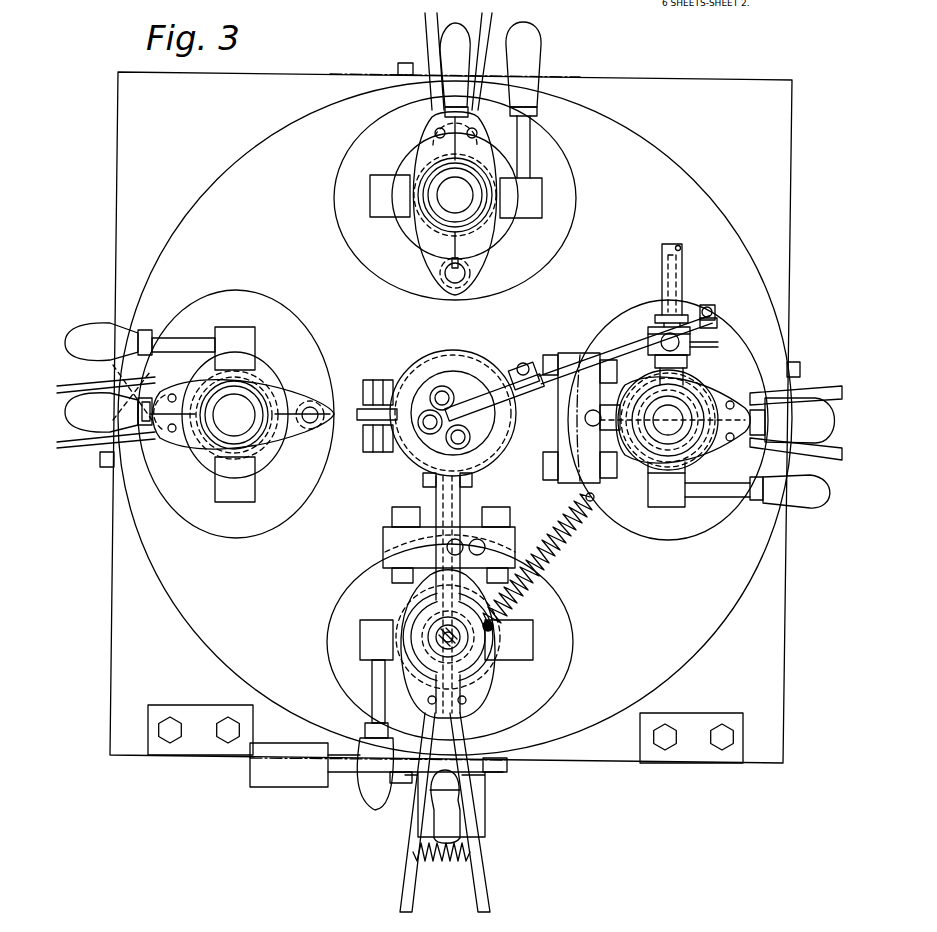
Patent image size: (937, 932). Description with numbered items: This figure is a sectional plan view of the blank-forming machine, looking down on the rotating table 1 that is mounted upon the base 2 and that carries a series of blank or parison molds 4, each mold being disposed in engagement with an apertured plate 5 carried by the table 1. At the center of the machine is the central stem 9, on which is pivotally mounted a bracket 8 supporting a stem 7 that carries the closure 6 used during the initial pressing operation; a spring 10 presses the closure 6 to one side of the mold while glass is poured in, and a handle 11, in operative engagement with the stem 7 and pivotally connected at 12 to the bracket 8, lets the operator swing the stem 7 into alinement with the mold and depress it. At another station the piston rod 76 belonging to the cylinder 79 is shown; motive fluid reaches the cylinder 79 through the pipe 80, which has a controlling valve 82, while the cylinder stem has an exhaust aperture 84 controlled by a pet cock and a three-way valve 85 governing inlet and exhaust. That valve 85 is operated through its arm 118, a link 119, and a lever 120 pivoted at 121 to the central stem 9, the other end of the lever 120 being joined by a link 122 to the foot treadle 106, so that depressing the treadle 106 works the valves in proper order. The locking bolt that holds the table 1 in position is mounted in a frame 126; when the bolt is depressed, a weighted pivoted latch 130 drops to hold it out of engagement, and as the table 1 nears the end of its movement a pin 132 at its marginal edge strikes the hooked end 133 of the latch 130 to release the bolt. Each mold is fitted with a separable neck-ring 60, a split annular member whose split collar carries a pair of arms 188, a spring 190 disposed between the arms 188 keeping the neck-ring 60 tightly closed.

The rotating table 1 is at (195, 205).
The base 2 is at (445, 710).
The blank or parison mold 4 is at (478, 228).
The apertured plate 5 is at (365, 255).
The closure 6 is at (485, 684).
The stem 7 is at (440, 630).
The bracket 8 is at (392, 574).
The central stem 9 is at (458, 372).
The spring 10 is at (545, 548).
The handle 11 is at (440, 826).
The pivotal connection 12 is at (464, 491).
The separable neck-ring 60 is at (272, 428).
The piston rod 76 is at (668, 420).
The cylinder 79 is at (645, 470).
The pipe 80 is at (683, 256).
The controlling valve 82 is at (719, 346).
The exhaust aperture 84 is at (660, 270).
The three-way valve 85 is at (690, 362).
The foot treadle 106 is at (490, 825).
The arm 118 is at (722, 323).
The link 119 is at (711, 308).
The lever 120 is at (620, 345).
The pivot 121 is at (527, 365).
The link 122 is at (430, 400).
The frame 126 is at (578, 753).
The pivoted latch 130 is at (345, 775).
The pin 132 is at (400, 67).
The hooked end 133 is at (496, 773).
The arm 188 is at (428, 32).
The spring 190 is at (432, 864).